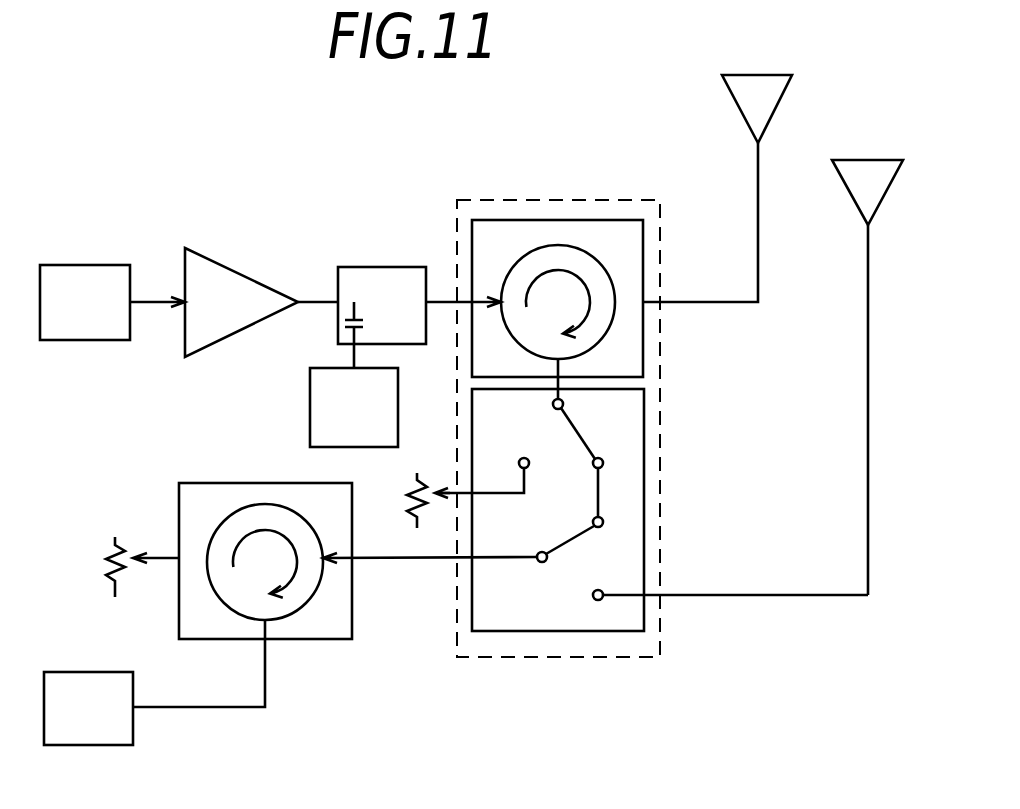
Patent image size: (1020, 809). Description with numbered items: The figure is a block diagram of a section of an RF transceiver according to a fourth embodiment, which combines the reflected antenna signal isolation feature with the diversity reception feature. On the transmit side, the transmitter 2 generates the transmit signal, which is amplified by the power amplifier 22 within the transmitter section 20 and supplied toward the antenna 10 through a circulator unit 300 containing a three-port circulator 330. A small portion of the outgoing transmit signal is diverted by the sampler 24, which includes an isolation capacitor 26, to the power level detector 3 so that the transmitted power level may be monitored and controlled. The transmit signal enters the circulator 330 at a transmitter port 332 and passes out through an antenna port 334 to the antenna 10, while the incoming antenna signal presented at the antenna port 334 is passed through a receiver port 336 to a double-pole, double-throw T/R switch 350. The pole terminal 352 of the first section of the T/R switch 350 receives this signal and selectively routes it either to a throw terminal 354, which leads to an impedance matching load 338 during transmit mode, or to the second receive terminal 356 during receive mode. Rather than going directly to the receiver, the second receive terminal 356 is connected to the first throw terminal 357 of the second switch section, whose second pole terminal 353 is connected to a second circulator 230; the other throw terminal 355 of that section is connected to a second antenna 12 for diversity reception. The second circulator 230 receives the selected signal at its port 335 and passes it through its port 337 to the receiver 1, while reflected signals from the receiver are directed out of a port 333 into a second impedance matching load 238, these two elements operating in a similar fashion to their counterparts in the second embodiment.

The receiver 1 is at (115, 672).
The transmitter 2 is at (85, 265).
The power level detector 3 is at (310, 405).
The antenna 10 is at (752, 145).
The second antenna 12 is at (861, 229).
The transmitter section 20 is at (266, 269).
The power amplifier 22 is at (200, 256).
The sampler 24 is at (343, 267).
The isolation capacitor 26 is at (342, 332).
The second circulator 230 is at (325, 482).
The second impedance matching load 238 is at (108, 542).
The antenna switching circuit 300 is at (661, 256).
The first circulator 330 is at (472, 227).
The first port of first circulator 332 is at (463, 310).
The first port of second circulator 333 is at (172, 547).
The second port of first circulator 334 is at (651, 301).
The second port of second circulator 335 is at (357, 552).
The third port of first circulator 336 is at (566, 367).
The third port of second circulator 337 is at (260, 642).
The terminating resistor 338 is at (408, 501).
The T/R switch 350 is at (644, 437).
The pole terminal 352 is at (570, 403).
The second pole terminal 353 is at (537, 560).
The switch contact 354 is at (508, 453).
The switch contact 355 is at (608, 589).
The second receive terminal 356 is at (608, 463).
The first throw terminal 357 is at (611, 523).